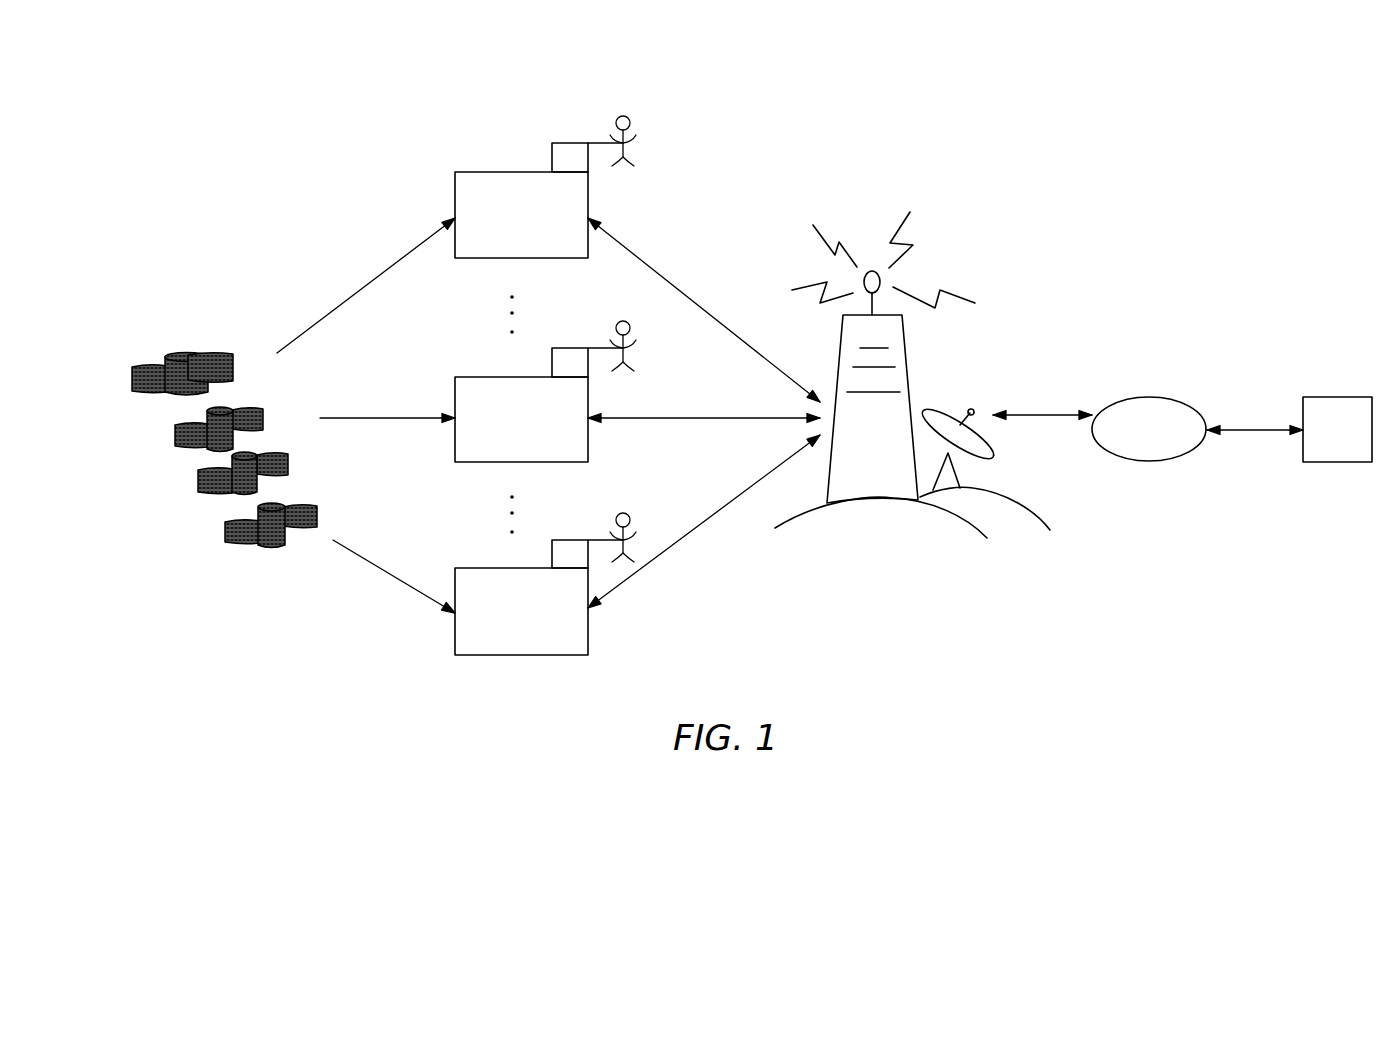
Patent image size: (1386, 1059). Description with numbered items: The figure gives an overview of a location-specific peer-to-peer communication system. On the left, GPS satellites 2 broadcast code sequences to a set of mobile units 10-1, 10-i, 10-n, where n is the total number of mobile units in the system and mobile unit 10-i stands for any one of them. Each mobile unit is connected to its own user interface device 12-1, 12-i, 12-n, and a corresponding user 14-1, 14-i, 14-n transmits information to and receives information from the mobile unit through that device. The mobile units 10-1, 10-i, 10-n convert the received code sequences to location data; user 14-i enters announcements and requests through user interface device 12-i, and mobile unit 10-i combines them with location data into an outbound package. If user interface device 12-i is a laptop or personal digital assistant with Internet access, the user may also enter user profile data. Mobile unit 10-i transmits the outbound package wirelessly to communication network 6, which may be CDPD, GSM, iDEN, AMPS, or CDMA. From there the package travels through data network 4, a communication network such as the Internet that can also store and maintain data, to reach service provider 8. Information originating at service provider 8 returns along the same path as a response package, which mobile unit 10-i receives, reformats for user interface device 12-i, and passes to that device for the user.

The GPS satellites 2 is at (115, 340).
The data network 4 is at (1156, 441).
The communication network 6 is at (993, 198).
The service provider 8 is at (1345, 438).
The mobile unit 10-1 is at (521, 215).
The mobile unit 10-i is at (521, 419).
The mobile unit 10-n is at (521, 611).
The user interface device 12-1 is at (568, 152).
The user interface device 12-i is at (569, 355).
The user interface device 12-n is at (569, 547).
The user 14-1 is at (638, 147).
The user 14-i is at (638, 352).
The user 14-n is at (637, 513).